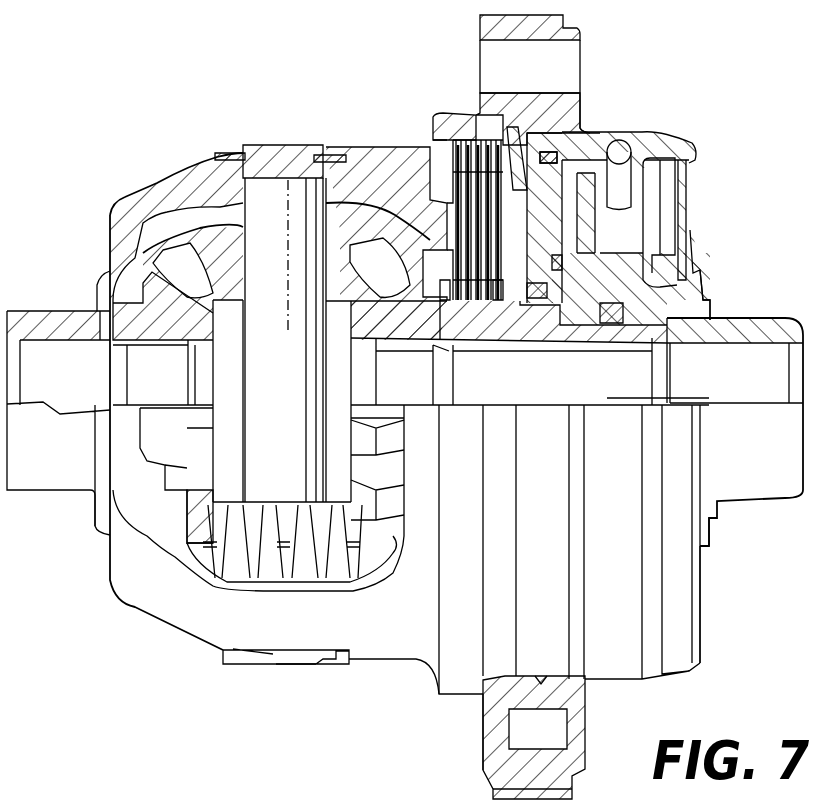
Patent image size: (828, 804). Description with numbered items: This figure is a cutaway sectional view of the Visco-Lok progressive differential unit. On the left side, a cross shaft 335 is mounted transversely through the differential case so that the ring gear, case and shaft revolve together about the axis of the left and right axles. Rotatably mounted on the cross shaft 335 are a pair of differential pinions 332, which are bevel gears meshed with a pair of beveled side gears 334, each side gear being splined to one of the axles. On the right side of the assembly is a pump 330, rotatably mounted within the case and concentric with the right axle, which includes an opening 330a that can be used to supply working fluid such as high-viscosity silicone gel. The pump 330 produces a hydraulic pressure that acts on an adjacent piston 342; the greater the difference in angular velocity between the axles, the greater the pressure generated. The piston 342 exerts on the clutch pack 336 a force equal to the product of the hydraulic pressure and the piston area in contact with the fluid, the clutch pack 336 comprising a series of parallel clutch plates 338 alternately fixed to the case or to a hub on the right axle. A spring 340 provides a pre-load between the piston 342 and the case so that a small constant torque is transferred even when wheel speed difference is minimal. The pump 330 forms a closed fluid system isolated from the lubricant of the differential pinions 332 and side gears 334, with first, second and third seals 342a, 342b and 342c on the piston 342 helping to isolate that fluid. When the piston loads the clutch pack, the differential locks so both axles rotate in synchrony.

The pump 330 is at (595, 230).
The opening 330a is at (622, 188).
The differential pinions 332 is at (203, 225).
The side gears 334 is at (143, 226).
The cross shaft 335 is at (278, 193).
The clutch pack 336 is at (463, 137).
The clutch plates 338 is at (450, 190).
The spring 340 is at (510, 140).
The piston 342 is at (553, 150).
The first seal 342a is at (540, 300).
The second seal 342b is at (587, 140).
The third seal 342c is at (560, 265).